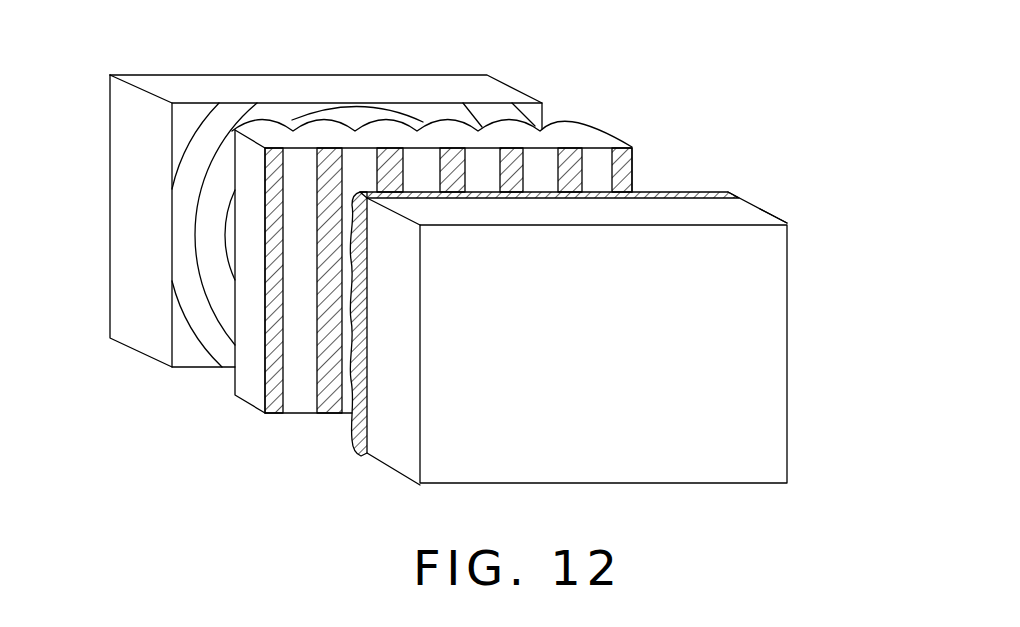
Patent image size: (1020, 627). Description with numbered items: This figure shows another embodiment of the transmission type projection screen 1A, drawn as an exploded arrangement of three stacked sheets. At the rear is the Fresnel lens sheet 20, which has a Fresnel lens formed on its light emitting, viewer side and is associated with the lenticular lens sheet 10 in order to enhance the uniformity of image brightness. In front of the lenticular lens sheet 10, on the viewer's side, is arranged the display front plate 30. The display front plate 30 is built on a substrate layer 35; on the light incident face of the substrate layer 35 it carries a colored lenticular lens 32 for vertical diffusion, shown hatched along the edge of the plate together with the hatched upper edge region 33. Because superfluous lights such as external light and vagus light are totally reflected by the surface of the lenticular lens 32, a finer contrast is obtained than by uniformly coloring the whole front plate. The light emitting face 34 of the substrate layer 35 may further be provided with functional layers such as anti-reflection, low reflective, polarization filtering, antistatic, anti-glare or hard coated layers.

The transmission type projection screen 1A is at (88, 178).
The Fresnel lens sheet 20 is at (497, 73).
The lenticular lens sheet 10 is at (589, 117).
The display front plate 30 is at (807, 191).
The upper frame strip 33 is at (655, 193).
The colored lenticular lens 32 is at (347, 437).
The light emitting face 34 is at (752, 420).
The substrate layer 35 is at (743, 215).